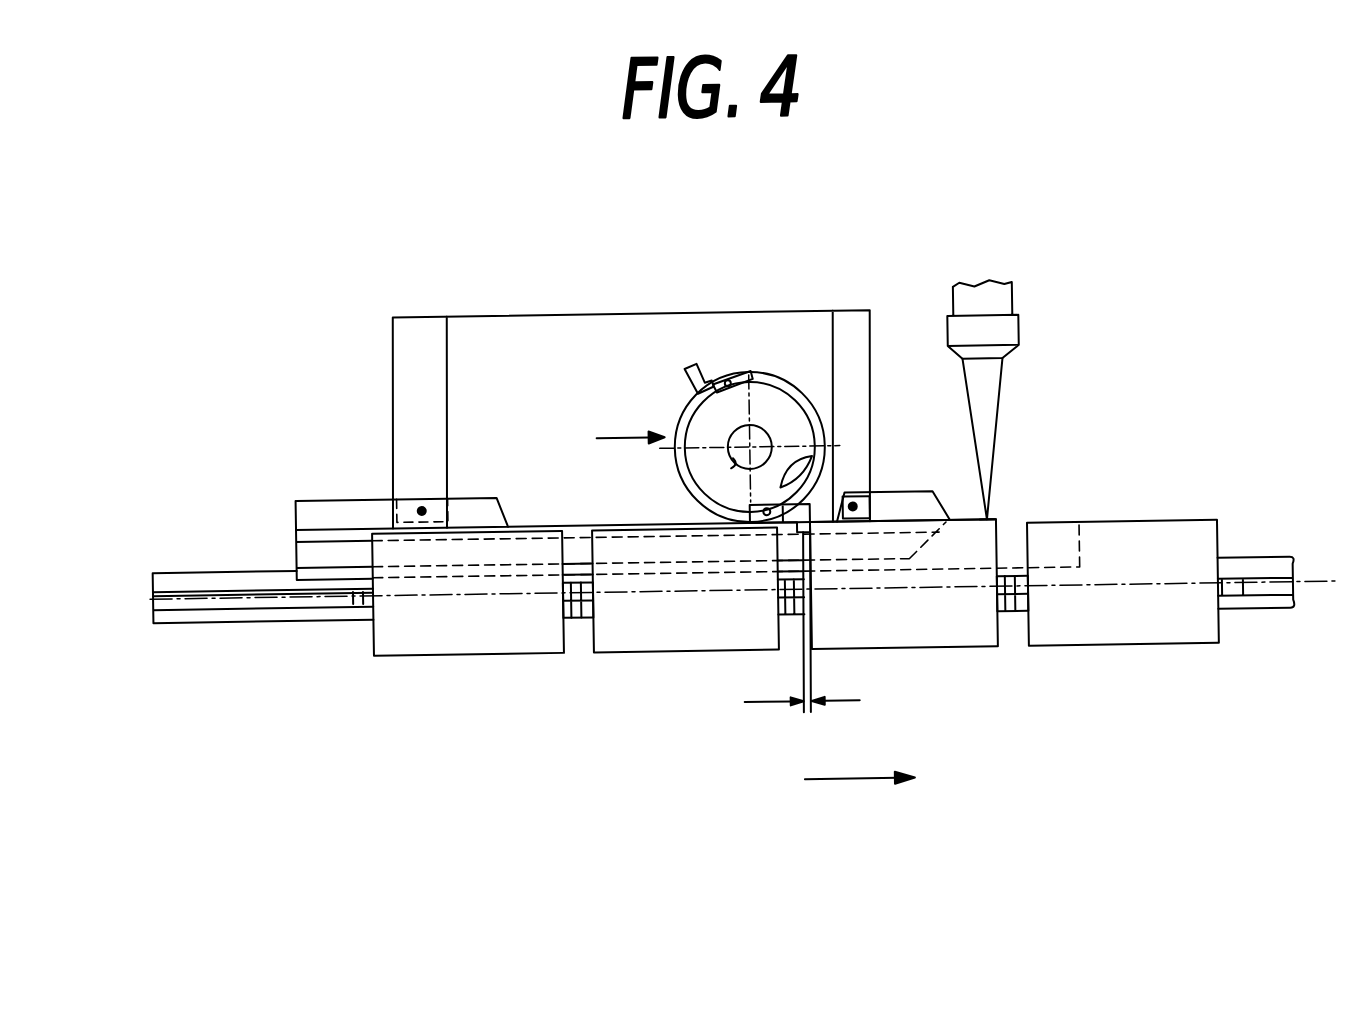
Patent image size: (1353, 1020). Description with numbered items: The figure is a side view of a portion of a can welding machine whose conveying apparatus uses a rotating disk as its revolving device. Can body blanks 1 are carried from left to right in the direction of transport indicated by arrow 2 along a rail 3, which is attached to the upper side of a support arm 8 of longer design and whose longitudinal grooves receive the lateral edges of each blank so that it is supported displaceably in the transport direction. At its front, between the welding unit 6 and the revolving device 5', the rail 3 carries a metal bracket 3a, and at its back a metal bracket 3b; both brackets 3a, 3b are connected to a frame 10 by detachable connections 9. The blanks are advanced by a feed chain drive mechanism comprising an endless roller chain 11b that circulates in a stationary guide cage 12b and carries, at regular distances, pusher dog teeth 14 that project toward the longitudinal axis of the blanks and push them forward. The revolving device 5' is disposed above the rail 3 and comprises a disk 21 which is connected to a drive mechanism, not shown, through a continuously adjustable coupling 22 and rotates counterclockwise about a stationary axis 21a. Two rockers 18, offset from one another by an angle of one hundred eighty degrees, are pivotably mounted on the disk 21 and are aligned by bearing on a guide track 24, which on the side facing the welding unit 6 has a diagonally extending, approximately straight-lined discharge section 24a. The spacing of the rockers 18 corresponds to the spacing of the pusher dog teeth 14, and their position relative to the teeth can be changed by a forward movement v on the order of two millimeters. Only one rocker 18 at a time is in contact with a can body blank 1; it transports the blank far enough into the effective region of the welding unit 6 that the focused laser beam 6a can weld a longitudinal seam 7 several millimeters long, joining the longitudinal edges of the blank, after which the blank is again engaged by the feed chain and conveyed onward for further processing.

The can body blank 1 is at (489, 631).
The direction of transport arrow 2 is at (845, 780).
The rail 3 is at (313, 545).
The metal bracket 3a is at (938, 495).
The metal bracket 3b is at (351, 497).
The revolving device 5' is at (611, 443).
The welding unit 6 is at (1007, 332).
The focused laser beam 6a is at (990, 399).
The longitudinal seam 7 is at (991, 522).
The support arm 8 is at (1012, 554).
The detachable connections 9 is at (426, 503).
The frame 10 is at (522, 331).
The endless roller chain 11b is at (278, 591).
The stationary guide cage 12b is at (1255, 571).
The pusher dog teeth 14 is at (357, 588).
The rockers 18 is at (714, 385).
The disk 21 is at (792, 378).
The stationary axis 21a is at (735, 440).
The continuously adjustable coupling 22 is at (735, 460).
The guide track 24 is at (743, 432).
The discharge section 24a is at (754, 503).
The forward movement v is at (802, 685).